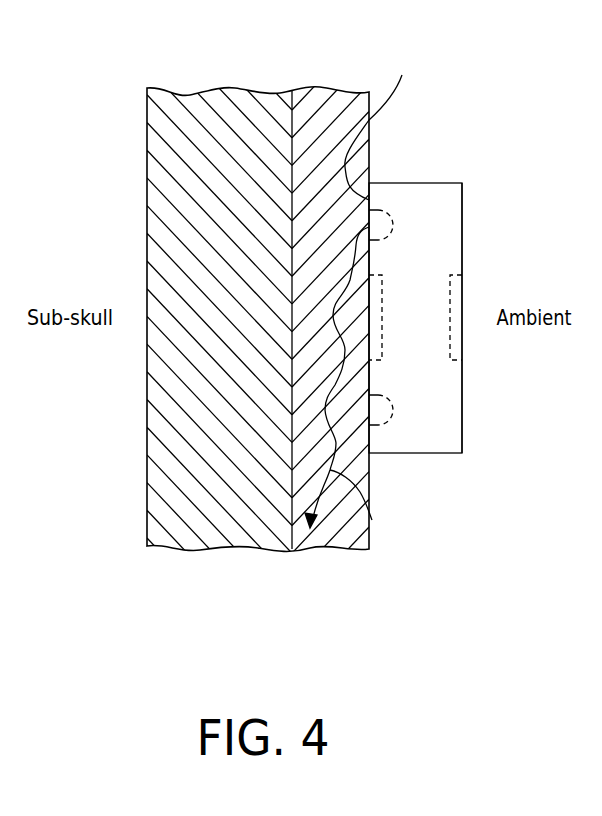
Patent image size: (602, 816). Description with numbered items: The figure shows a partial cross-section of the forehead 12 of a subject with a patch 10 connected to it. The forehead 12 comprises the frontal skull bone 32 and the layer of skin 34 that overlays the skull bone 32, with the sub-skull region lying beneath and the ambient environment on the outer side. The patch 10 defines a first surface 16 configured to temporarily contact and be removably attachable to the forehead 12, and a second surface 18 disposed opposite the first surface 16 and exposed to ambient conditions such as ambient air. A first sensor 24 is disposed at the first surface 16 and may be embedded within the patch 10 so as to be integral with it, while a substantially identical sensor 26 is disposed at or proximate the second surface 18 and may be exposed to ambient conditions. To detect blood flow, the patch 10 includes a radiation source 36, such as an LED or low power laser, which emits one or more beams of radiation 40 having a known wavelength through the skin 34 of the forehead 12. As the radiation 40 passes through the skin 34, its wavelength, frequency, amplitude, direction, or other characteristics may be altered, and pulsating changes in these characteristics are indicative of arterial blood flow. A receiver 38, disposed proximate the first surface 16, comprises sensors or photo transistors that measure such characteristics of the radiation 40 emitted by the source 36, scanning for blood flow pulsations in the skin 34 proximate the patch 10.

The patch 10 is at (430, 183).
The forehead 12 is at (147, 70).
The first surface 16 is at (364, 289).
The second surface 18 is at (462, 242).
The first sensor 24 is at (382, 288).
The sensor 26 is at (450, 288).
The frontal skull bone 32 is at (203, 548).
The layer of skin 34 is at (326, 550).
The radiation source 36 is at (385, 213).
The receiver 38 is at (391, 416).
The radiation 40 is at (372, 520).